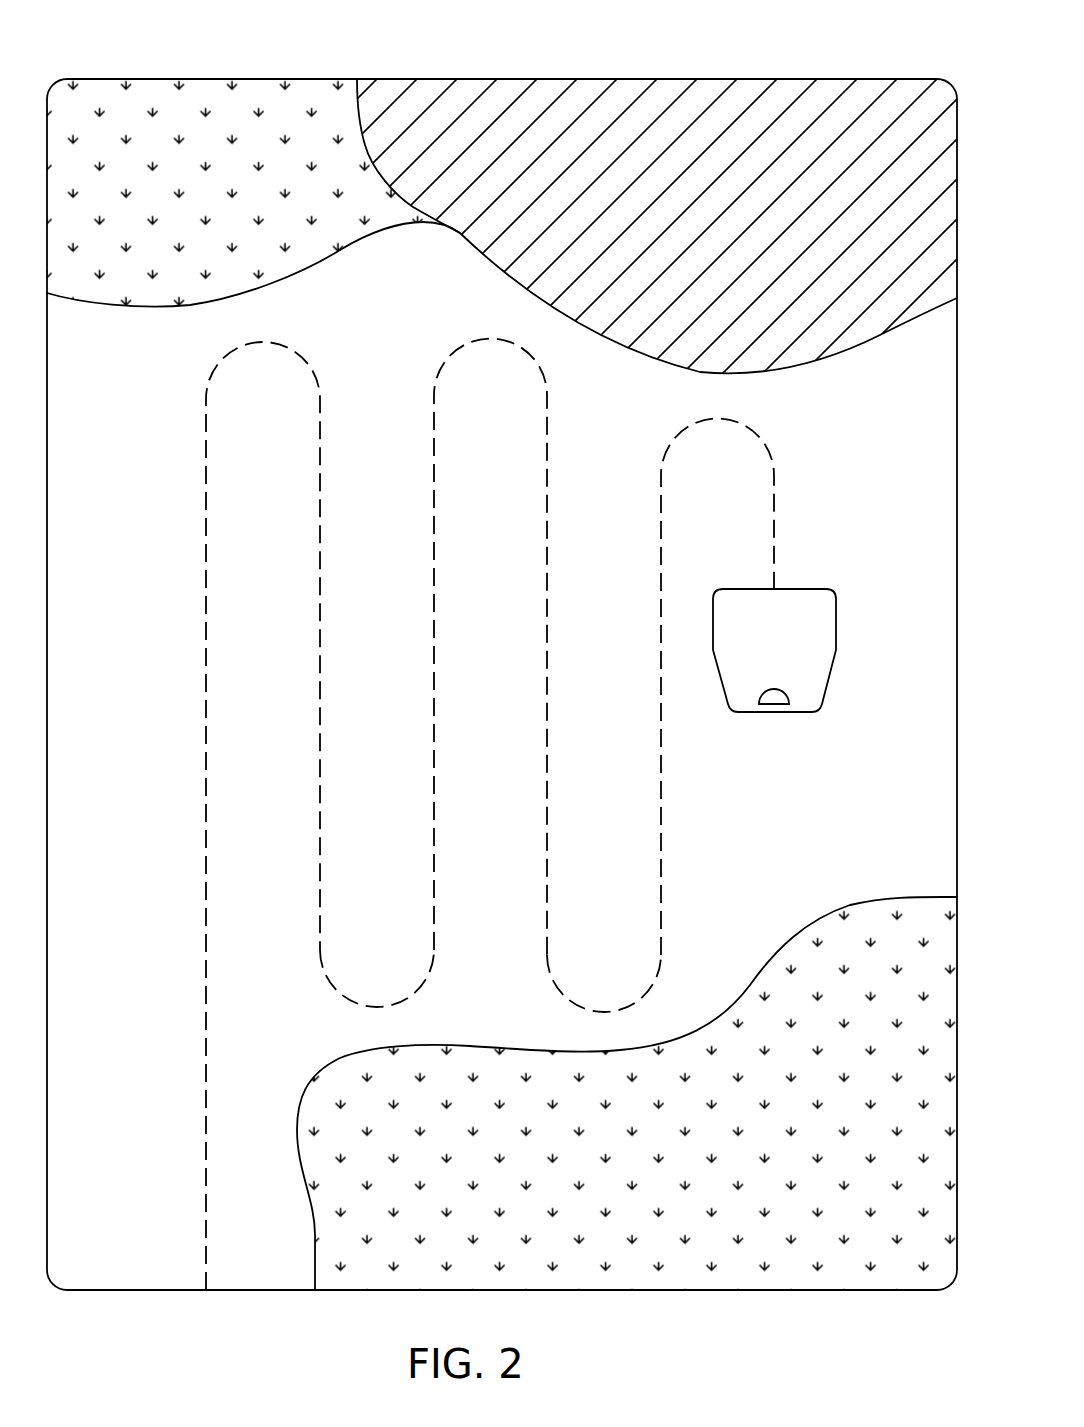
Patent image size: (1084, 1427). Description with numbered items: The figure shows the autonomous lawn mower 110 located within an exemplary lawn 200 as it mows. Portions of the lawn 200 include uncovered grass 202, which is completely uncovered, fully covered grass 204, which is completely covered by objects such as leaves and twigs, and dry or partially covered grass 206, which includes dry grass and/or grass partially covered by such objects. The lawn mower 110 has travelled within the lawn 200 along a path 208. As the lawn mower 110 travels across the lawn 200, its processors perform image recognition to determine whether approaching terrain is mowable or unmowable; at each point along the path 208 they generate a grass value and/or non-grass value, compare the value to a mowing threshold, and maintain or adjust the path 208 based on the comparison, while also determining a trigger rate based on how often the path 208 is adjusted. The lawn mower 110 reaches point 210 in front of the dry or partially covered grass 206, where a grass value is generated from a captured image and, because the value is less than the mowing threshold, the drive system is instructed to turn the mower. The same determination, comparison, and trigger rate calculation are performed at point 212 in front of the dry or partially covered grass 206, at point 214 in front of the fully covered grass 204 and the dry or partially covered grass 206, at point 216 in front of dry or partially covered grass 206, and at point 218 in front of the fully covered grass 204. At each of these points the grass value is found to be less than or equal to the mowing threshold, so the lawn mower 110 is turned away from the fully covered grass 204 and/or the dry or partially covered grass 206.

The lawn 200 is at (133, 46).
The uncovered grass 202 is at (137, 690).
The fully covered grass 204 is at (709, 92).
The dry or partially covered grass 206 is at (258, 95).
The path 208 is at (206, 925).
The point 210 is at (206, 408).
The point 212 is at (320, 948).
The point 214 is at (434, 394).
The point 216 is at (548, 955).
The point 218 is at (661, 478).
The lawn mower 110 is at (836, 618).